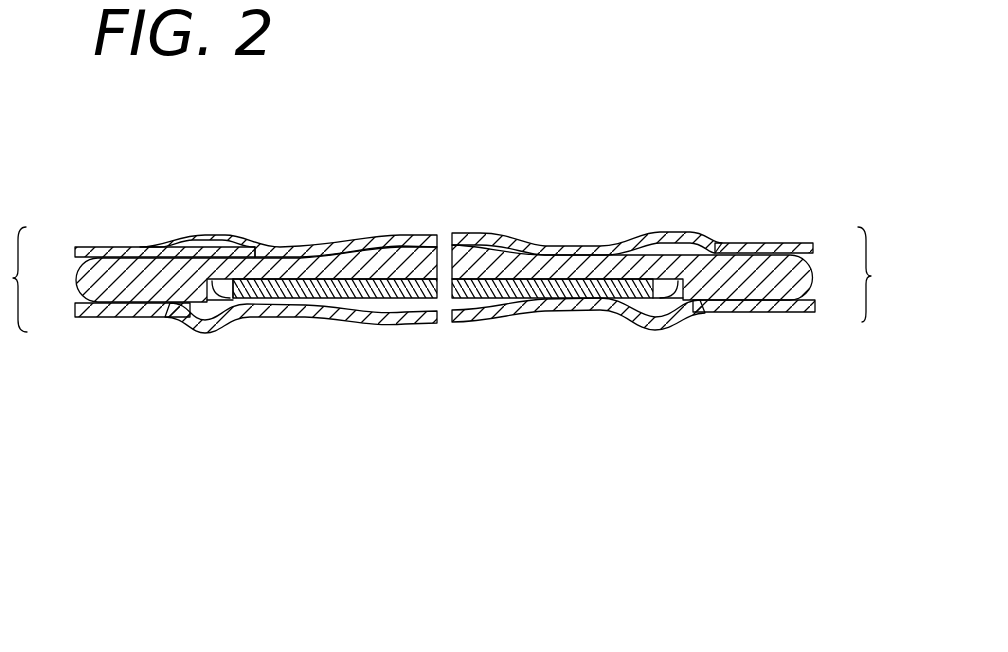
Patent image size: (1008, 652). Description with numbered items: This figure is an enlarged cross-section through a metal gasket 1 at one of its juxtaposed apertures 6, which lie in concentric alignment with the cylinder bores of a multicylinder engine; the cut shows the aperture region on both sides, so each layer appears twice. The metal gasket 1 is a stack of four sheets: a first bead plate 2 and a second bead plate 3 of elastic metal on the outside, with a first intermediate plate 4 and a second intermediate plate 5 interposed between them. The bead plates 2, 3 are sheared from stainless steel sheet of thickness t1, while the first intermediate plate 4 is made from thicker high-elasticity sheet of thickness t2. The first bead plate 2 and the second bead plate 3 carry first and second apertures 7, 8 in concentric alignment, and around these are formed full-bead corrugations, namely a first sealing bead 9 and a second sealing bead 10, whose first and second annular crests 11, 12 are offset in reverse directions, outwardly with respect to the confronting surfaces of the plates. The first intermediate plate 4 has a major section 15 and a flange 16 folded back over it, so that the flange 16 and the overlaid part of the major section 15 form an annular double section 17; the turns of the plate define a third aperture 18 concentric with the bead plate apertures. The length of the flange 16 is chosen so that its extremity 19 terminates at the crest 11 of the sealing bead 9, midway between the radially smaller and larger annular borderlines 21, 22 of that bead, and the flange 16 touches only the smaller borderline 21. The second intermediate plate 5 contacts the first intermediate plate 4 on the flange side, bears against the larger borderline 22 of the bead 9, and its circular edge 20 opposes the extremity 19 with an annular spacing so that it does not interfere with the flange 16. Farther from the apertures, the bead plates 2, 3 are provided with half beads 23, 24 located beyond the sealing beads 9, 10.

The metal gasket 1 is at (529, 215).
The first bead plate 2 is at (323, 322).
The second bead plate 3 is at (334, 243).
The first intermediate plate 4 is at (396, 262).
The second intermediate plate 5 is at (414, 290).
The aperture 6 is at (443, 279).
The first aperture 7 is at (75, 306).
The second aperture 8 is at (75, 251).
The first sealing bead 9 is at (170, 320).
The second sealing bead 10 is at (196, 237).
The first annular crest 11 is at (222, 322).
The second annular crest 12 is at (218, 238).
The major section 15 is at (270, 250).
The flange 16 is at (135, 300).
The annular double section 17 is at (107, 246).
The third aperture 18 is at (76, 285).
The extremity 19 is at (200, 322).
The circular edge 20 is at (238, 320).
The radially smaller annular borderline 21 is at (150, 322).
The radially larger annular borderline 22 is at (248, 312).
The half bead 23 is at (367, 322).
The half bead 24 is at (373, 247).
The thickness of bead plate t1 is at (188, 222).
The thickness of first intermediate plate t2 is at (500, 253).